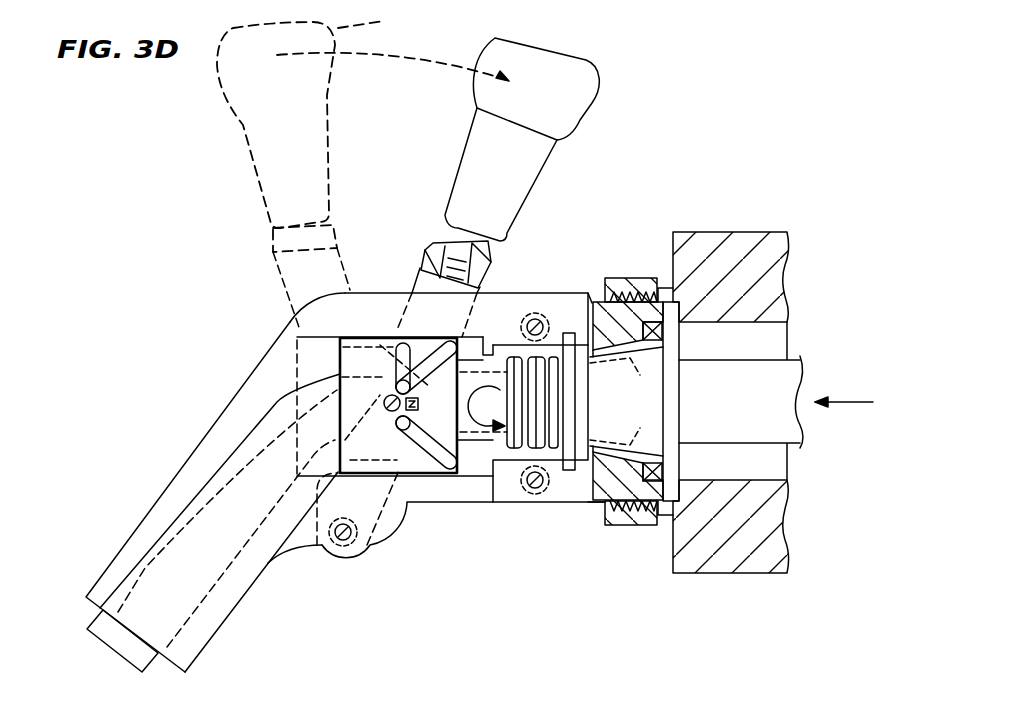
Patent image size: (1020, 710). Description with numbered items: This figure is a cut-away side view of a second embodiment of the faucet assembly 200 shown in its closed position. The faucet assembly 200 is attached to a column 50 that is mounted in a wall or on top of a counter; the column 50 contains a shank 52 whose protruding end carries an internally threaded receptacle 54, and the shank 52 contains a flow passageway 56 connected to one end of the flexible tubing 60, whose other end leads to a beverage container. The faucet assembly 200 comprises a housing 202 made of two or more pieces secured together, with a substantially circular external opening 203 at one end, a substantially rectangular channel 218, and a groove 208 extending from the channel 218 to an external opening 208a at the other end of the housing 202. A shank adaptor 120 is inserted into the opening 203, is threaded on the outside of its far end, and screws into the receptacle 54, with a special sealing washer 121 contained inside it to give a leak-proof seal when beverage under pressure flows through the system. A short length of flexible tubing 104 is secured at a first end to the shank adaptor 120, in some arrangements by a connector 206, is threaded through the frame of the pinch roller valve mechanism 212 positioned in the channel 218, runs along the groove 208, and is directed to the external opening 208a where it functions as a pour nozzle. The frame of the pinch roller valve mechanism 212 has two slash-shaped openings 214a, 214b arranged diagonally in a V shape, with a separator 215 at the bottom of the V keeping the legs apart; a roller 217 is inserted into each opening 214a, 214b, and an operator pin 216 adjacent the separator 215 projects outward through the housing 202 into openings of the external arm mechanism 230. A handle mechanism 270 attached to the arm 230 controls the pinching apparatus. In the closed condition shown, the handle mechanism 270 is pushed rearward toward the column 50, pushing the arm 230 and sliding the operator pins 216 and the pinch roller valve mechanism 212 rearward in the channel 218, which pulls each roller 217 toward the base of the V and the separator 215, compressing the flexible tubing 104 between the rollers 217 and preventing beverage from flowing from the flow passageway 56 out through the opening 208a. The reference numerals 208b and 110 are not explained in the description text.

The faucet assembly 200 is at (168, 183).
The handle mechanism 270 is at (497, 52).
The arm mechanism 230 is at (425, 282).
The pinch roller valve mechanism 212 is at (397, 383).
The slash-shaped opening 214a is at (440, 345).
The slash-shaped opening 214b is at (440, 468).
The roller 217 is at (286, 334).
The operator pin 216 is at (296, 444).
The separator 215 is at (423, 460).
The groove 208 is at (243, 562).
The external opening 208a is at (83, 613).
The sleeve hidden portion 208b is at (490, 300).
The short length of flexible tubing 104 is at (112, 635).
The channel 218 is at (490, 475).
The housing 202 is at (510, 493).
The external opening 203 is at (592, 463).
The connector 206 is at (568, 322).
The shank adaptor 120 is at (625, 490).
The sealing washer 121 is at (655, 462).
The plate 110 is at (678, 397).
The receptacle 54 is at (625, 290).
The shank 52 is at (662, 300).
The column 50 is at (733, 237).
The flow passageway 56 is at (723, 477).
The flexible tubing 60 is at (805, 383).